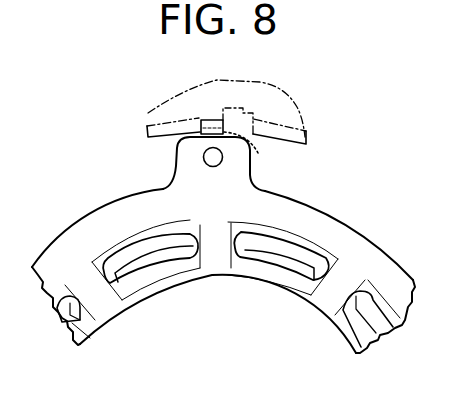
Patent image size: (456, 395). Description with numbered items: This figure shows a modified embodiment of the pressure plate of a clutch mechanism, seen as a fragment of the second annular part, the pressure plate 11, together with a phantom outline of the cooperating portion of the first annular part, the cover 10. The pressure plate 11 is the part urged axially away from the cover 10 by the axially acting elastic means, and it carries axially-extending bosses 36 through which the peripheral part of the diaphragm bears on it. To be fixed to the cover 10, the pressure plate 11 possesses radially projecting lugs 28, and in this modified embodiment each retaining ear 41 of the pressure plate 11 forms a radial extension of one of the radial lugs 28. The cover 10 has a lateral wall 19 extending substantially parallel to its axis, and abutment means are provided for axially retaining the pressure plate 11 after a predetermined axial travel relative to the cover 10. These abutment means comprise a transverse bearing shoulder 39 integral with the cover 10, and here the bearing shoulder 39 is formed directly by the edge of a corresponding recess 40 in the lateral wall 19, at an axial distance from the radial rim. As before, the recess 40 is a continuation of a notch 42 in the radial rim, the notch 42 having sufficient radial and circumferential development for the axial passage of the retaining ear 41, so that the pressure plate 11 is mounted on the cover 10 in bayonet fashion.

The cover 10 is at (143, 120).
The pressure plate 11 is at (72, 226).
The lateral wall 19 is at (288, 125).
The radially projecting lugs 28 is at (176, 157).
The axially-extending boss 36 is at (180, 255).
The transverse bearing shoulder 39 is at (252, 149).
The recess 40 is at (173, 115).
The retaining ear 41 is at (208, 120).
The notch 42 is at (235, 108).